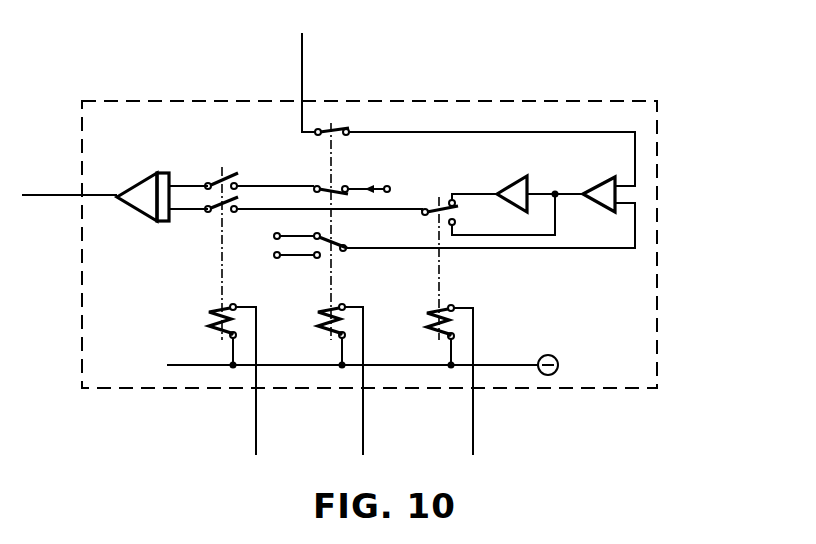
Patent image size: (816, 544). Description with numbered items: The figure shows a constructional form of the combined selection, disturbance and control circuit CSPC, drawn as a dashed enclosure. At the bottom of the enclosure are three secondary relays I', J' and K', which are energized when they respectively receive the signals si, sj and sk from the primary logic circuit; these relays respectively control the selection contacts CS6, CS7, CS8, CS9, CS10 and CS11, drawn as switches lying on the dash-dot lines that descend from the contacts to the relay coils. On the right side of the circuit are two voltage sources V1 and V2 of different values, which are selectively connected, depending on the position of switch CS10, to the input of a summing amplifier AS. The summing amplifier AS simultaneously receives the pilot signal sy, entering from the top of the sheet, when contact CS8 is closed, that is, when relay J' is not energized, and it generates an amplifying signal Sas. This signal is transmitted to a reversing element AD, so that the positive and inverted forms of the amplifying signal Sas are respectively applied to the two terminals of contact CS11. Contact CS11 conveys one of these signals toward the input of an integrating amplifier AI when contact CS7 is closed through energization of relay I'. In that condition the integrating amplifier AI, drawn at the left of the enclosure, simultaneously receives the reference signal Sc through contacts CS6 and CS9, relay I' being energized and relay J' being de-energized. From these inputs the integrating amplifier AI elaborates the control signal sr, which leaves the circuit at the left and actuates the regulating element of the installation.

The selection, disturbance and control circuit CSPC is at (471, 101).
The integrating amplifier AI is at (133, 184).
The reversing element AD is at (523, 181).
The summing amplifier AS is at (606, 180).
The selection contact CS6 is at (207, 172).
The selection contact CS7 is at (207, 218).
The selection contact CS8 is at (345, 148).
The selection contact CS9 is at (318, 175).
The selection contact CS10 is at (344, 257).
The selection contact CS11 is at (430, 200).
The reference signal Sc is at (375, 186).
The amplifying signal Sas is at (503, 216).
The voltage source V1 is at (284, 239).
The voltage source V2 is at (293, 269).
The secondary relay I' is at (222, 379).
The secondary relay J' is at (330, 379).
The secondary relay K' is at (437, 380).
The control signal sr is at (69, 182).
The pilot signal sy is at (314, 82).
The signal si is at (234, 436).
The signal sj is at (345, 436).
The signal sk is at (454, 436).